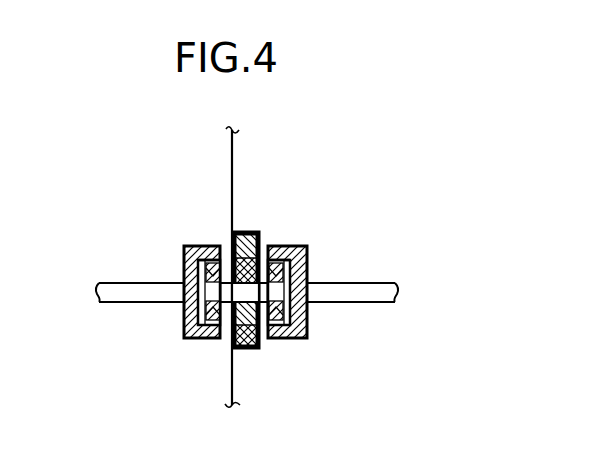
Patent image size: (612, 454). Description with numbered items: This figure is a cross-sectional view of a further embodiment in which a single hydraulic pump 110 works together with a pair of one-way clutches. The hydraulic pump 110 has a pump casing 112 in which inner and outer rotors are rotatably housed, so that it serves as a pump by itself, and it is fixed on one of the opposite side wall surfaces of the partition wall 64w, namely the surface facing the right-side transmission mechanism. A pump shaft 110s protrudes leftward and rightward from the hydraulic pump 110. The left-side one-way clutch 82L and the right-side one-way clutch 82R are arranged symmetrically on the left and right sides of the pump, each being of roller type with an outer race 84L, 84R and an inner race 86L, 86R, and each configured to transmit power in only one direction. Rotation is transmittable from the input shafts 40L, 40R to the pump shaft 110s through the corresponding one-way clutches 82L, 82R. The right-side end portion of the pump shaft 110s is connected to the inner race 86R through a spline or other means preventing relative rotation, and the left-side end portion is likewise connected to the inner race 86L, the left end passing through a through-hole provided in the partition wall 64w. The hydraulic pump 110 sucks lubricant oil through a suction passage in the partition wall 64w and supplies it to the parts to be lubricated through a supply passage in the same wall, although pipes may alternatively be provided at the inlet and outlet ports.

The partition wall 64w is at (232, 184).
The left-side input shaft 40L is at (121, 296).
The right-side input shaft 40R is at (363, 296).
The left-side one-way clutch 82L is at (180, 246).
The right-side one-way clutch 82R is at (311, 246).
The outer race 84L is at (208, 340).
The outer race 84R is at (283, 340).
The inner race 86L is at (210, 245).
The inner race 86R is at (280, 245).
The hydraulic pump 110 is at (252, 229).
The pump shaft 110s is at (228, 342).
The pump casing 112 is at (262, 348).